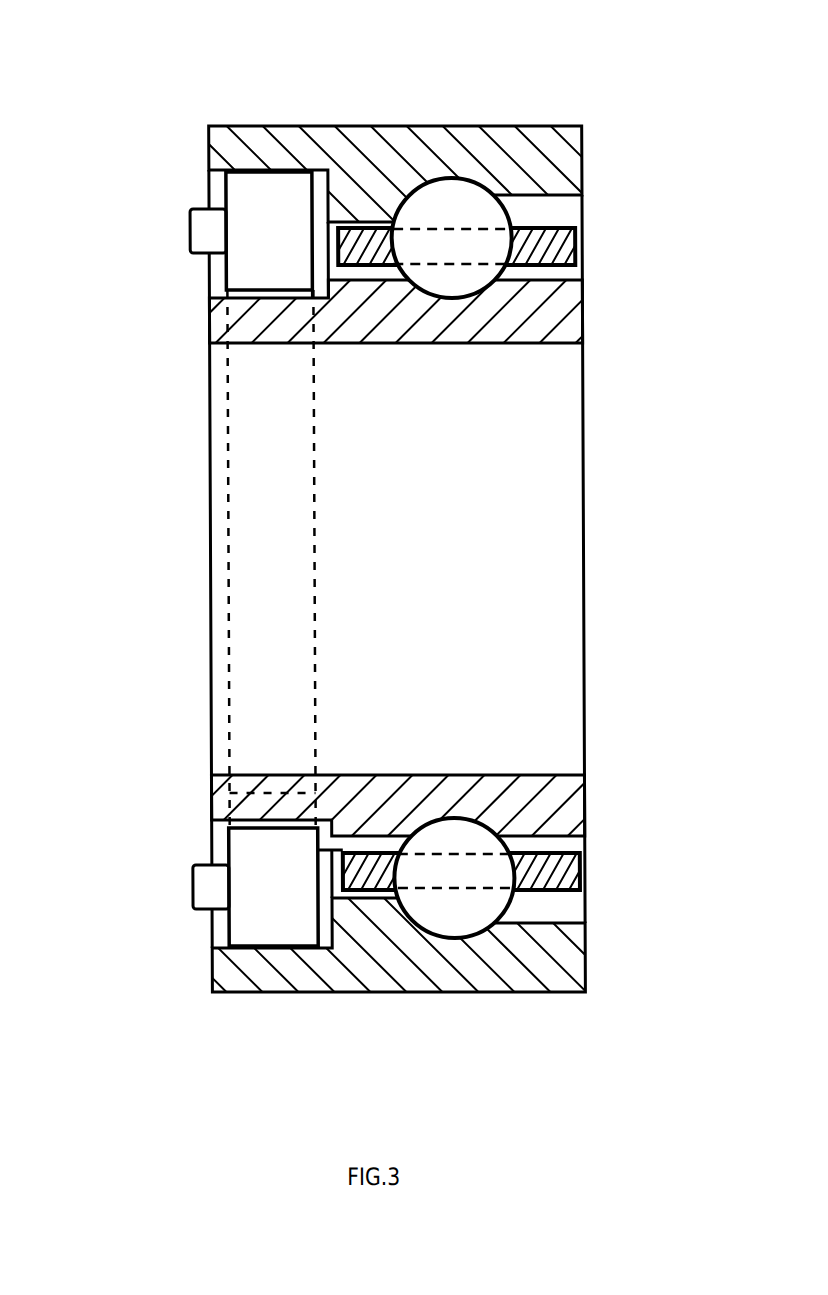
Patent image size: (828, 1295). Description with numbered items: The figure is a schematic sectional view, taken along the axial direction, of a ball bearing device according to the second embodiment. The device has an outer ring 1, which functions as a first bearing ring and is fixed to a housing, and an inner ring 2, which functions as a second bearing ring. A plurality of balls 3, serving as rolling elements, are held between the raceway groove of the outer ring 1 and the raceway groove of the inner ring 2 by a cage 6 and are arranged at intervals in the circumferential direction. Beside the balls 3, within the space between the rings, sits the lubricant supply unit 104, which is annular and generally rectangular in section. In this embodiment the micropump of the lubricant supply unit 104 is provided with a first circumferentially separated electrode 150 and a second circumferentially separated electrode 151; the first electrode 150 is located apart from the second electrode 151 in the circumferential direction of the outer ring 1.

The outer ring 1 is at (398, 150).
The inner ring 2 is at (565, 316).
The balls 3 is at (450, 203).
The cage 6 is at (575, 238).
The lubricant supply unit 104 is at (268, 188).
The first circumferentially separated electrode 150 is at (189, 228).
The second circumferentially separated electrode 151 is at (192, 885).